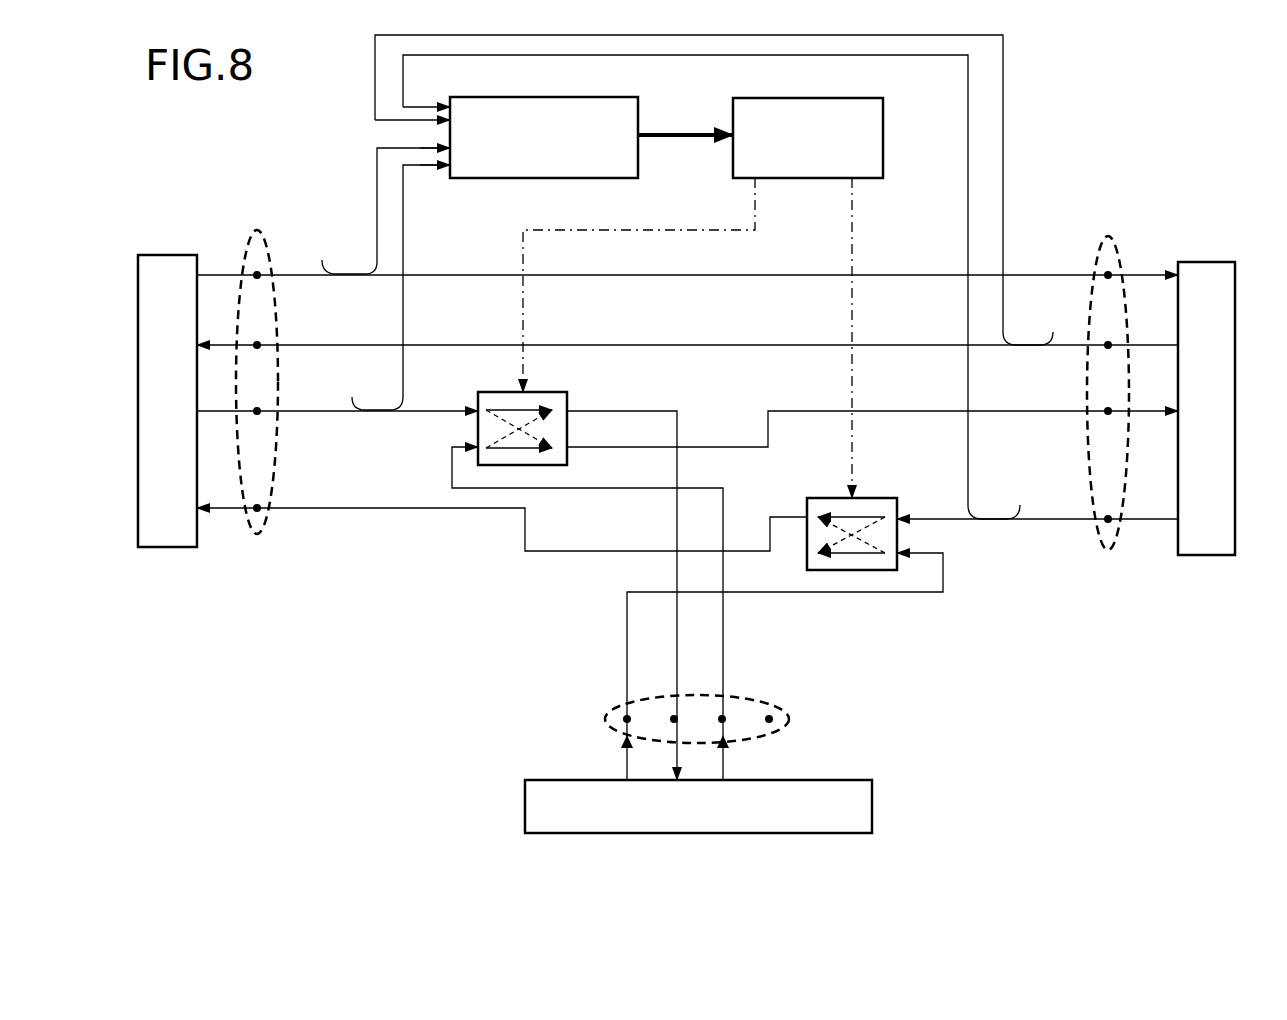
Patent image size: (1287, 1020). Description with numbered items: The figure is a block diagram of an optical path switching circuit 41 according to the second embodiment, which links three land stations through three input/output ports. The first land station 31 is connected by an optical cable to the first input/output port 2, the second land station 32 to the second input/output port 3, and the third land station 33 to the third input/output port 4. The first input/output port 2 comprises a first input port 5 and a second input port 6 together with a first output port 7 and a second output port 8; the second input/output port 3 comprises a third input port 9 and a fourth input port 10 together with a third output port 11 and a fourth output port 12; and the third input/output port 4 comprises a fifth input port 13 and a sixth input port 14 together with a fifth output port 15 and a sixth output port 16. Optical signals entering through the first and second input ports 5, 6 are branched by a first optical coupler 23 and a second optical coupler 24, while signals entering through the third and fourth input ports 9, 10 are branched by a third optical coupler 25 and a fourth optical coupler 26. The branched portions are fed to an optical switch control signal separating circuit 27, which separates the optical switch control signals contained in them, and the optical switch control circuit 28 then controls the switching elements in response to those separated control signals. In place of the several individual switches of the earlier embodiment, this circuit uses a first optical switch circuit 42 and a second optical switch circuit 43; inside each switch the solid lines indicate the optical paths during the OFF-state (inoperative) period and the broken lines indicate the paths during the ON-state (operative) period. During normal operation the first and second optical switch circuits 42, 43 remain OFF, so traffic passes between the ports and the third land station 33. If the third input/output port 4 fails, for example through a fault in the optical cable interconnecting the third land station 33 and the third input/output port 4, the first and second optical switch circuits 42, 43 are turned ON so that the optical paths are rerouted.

The first input/output port 2 is at (262, 238).
The second input/output port 3 is at (1110, 250).
The third input/output port 4 is at (792, 719).
The first input port 5 is at (257, 275).
The second input port 6 is at (257, 411).
The first output port 7 is at (257, 345).
The second output port 8 is at (257, 525).
The third input port 9 is at (1108, 345).
The fourth input port 10 is at (1108, 540).
The third output port 11 is at (1108, 275).
The fourth output port 12 is at (1108, 411).
The fifth input port 13 is at (627, 719).
The sixth input port 14 is at (722, 719).
The fifth output port 15 is at (674, 719).
The sixth output port 16 is at (769, 719).
The first optical coupler 23 is at (342, 268).
The second optical coupler 24 is at (367, 407).
The third optical coupler 25 is at (1022, 341).
The fourth optical coupler 26 is at (996, 513).
The optical switch control signal separating circuit 27 is at (571, 97).
The optical switch control circuit 28 is at (835, 98).
The first land station 31 is at (165, 255).
The second land station 32 is at (1204, 262).
The third land station 33 is at (873, 797).
The optical path switching circuit 41 is at (1082, 80).
The first optical switch circuit 42 is at (566, 393).
The second optical switch circuit 43 is at (897, 498).